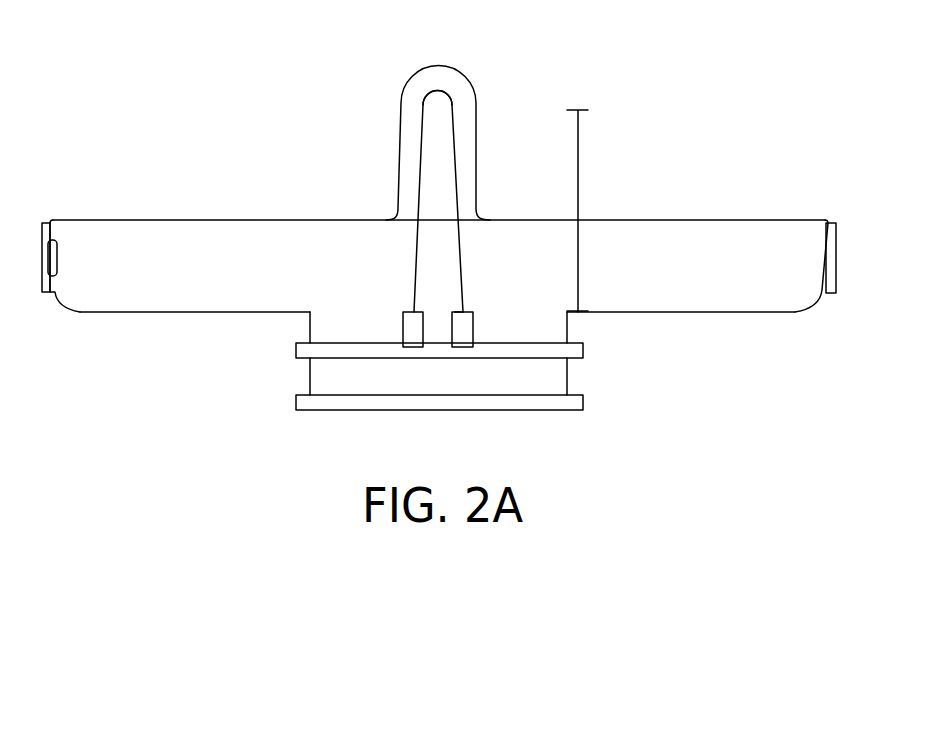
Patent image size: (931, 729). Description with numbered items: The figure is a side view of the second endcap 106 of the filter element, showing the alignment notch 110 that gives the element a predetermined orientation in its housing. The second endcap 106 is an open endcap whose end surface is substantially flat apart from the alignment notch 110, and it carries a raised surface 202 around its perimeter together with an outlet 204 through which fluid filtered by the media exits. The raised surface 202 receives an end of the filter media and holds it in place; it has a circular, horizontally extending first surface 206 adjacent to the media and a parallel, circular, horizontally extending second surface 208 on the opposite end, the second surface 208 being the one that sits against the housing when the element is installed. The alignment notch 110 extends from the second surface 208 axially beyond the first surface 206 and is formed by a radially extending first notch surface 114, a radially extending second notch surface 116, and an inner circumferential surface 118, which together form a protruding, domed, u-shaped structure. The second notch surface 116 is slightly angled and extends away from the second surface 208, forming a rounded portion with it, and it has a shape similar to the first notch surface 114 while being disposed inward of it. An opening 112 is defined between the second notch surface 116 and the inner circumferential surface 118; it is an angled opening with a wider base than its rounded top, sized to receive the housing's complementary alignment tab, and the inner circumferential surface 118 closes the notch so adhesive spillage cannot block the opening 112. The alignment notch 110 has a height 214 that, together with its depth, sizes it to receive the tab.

The second endcap 106 is at (449, 241).
The alignment notch 110 is at (392, 231).
The opening 112 is at (428, 290).
The first notch surface 114 is at (477, 165).
The second notch surface 116 is at (461, 296).
The inner circumferential surface 118 is at (432, 251).
The raised surface 202 is at (825, 308).
The outlet 204 is at (557, 411).
The first surface 206 is at (792, 218).
The second surface 208 is at (738, 314).
The height 214 is at (595, 211).